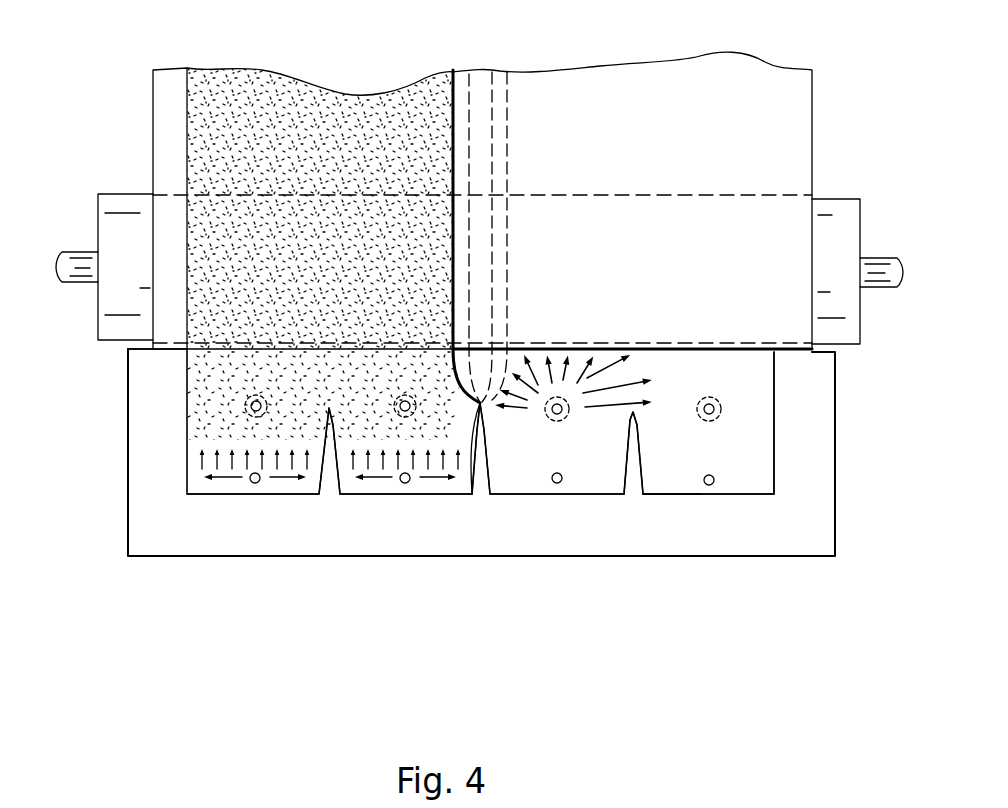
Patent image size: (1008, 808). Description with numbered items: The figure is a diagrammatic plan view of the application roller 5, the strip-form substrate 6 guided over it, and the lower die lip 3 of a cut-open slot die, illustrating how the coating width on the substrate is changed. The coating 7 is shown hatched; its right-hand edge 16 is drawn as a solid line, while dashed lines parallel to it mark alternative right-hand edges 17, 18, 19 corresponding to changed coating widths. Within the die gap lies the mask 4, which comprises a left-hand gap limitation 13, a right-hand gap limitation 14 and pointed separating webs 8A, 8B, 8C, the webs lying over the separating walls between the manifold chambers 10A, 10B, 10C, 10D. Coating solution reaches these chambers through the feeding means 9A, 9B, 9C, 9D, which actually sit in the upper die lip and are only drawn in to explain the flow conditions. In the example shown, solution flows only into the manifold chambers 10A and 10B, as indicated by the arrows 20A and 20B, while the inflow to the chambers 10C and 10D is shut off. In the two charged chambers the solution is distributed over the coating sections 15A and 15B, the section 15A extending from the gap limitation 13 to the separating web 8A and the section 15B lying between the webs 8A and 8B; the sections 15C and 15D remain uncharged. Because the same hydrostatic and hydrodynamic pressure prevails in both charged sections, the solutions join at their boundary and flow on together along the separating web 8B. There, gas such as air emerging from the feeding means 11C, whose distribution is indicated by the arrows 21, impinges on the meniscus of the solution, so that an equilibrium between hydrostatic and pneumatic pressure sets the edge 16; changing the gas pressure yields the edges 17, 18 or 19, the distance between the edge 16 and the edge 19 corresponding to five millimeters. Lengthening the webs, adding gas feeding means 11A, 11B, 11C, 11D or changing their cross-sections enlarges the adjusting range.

The lower die lip 3 is at (758, 395).
The mask 4 is at (470, 557).
The application roller 5 is at (848, 231).
The substrate 6 is at (690, 70).
The coating 7 is at (313, 97).
The separating web 8A is at (327, 470).
The separating web 8B is at (482, 470).
The separating web 8C is at (633, 470).
The feeding means for coating solution 9A is at (253, 483).
The feeding means for coating solution 9B is at (404, 484).
The feeding means for coating solution 9C is at (556, 484).
The feeding means for coating solution 9D is at (709, 486).
The manifold chamber 10A is at (285, 484).
The manifold chamber 10B is at (437, 484).
The manifold chamber 10C is at (510, 484).
The manifold chamber 10D is at (678, 486).
The feeding means for gas 11A is at (258, 413).
The feeding means for gas 11B is at (408, 413).
The feeding means for gas 11C is at (563, 416).
The feeding means for gas 11D is at (716, 412).
The left-hand gap limitation 13 is at (150, 374).
The right-hand gap limitation 14 is at (803, 458).
The coating section 15A is at (238, 375).
The coating section 15B is at (362, 382).
The coating section 15C is at (583, 425).
The coating section 15D is at (682, 397).
The right-hand edge of the coating 16 is at (453, 76).
The right-hand edge of the coating 17 is at (468, 95).
The right-hand edge of the coating 18 is at (488, 95).
The right-hand edge of the coating 19 is at (508, 96).
The arrows indicating coating solution flow 20A is at (210, 463).
The arrows indicating coating solution flow 20B is at (452, 465).
The arrows indicating gas flow distribution 21 is at (582, 390).